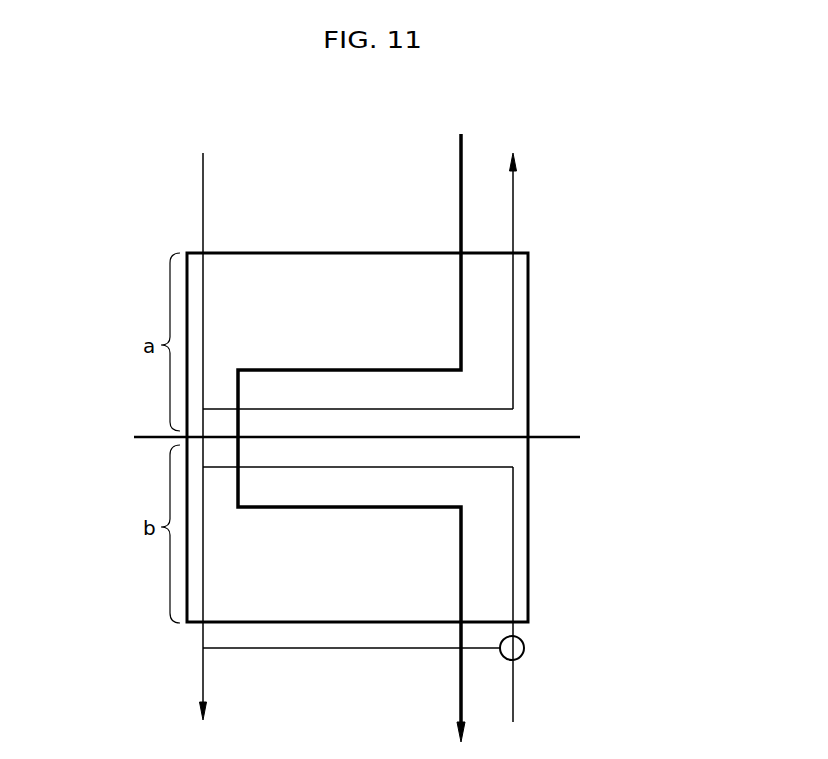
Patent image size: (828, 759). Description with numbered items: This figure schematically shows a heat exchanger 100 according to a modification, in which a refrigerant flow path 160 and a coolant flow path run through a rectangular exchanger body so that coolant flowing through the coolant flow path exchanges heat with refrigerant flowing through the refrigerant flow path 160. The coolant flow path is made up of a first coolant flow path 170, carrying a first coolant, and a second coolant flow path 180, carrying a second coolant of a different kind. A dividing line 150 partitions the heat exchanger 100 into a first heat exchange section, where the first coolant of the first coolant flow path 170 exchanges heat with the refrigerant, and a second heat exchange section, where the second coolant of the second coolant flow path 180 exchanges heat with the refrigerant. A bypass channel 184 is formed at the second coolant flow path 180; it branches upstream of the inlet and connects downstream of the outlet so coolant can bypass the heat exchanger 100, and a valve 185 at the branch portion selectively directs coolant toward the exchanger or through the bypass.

The heat exchanger 100 is at (553, 325).
The center line 150 is at (150, 441).
The refrigerant flow path 160 is at (460, 172).
The first coolant flow path 170 is at (202, 192).
The second coolant flow path 180 is at (514, 563).
The bypass channel 184 is at (355, 650).
The valve 185 is at (525, 648).